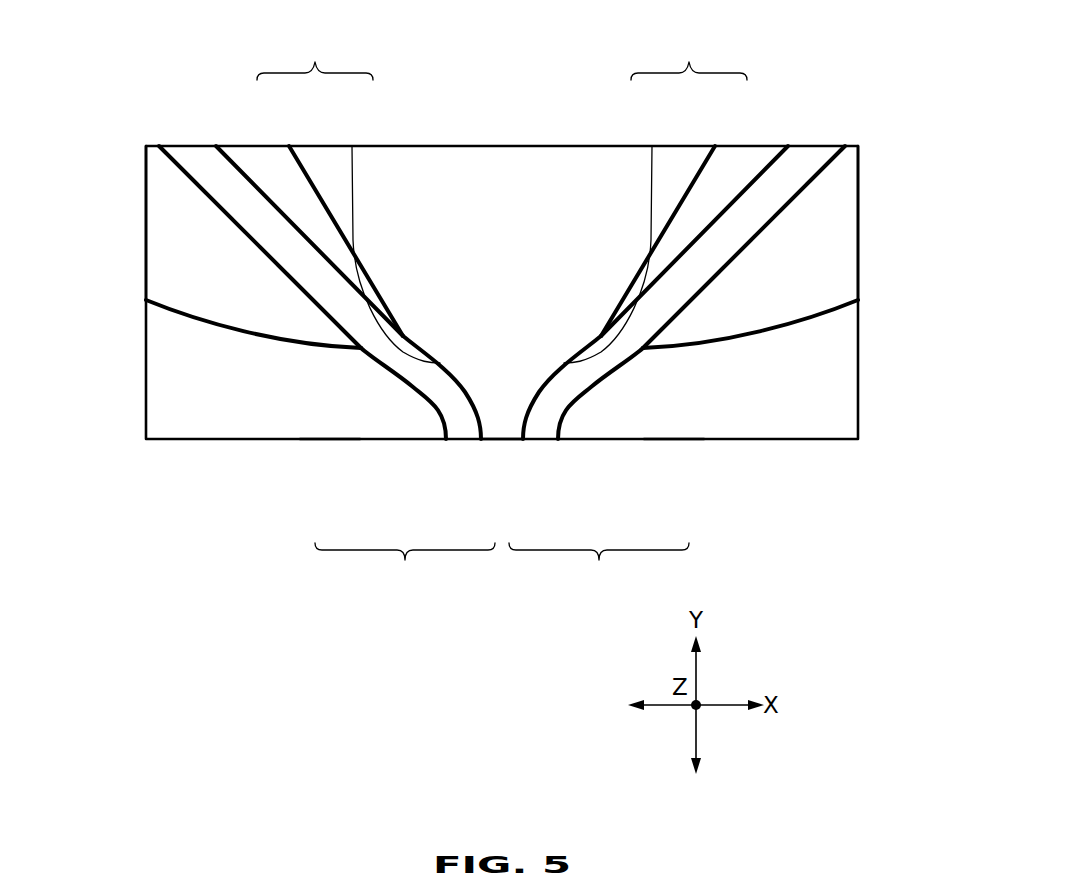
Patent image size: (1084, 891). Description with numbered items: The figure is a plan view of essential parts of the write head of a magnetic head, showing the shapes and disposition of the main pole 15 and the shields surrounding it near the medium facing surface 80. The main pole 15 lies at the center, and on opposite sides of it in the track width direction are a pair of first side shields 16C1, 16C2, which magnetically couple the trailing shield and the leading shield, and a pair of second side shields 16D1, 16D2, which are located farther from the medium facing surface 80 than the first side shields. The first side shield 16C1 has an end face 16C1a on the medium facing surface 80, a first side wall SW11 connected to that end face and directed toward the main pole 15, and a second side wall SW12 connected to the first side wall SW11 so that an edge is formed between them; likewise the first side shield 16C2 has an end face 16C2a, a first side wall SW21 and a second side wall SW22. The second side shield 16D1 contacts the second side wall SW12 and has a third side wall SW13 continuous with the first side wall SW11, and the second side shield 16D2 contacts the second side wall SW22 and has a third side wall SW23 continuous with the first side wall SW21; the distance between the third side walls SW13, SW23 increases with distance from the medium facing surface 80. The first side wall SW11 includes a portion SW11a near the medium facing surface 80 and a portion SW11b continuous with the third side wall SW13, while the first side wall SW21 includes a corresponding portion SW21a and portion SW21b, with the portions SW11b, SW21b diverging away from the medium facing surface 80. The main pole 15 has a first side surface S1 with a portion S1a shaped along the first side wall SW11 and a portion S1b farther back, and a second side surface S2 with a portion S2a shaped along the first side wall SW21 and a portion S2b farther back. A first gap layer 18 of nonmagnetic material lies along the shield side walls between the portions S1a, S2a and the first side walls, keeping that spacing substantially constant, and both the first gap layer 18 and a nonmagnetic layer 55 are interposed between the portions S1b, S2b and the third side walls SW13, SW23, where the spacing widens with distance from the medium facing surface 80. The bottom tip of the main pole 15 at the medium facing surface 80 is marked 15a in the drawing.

The main pole 15 is at (502, 160).
The bottom portion of insulating layer 15a is at (503, 439).
The first gap layer 18 is at (192, 152).
The nonmagnetic layer 55 is at (243, 152).
The medium facing surface 80 is at (164, 455).
The first side surface S1 is at (315, 57).
The portion of first side surface near the medium facing surface S1a is at (352, 146).
The portion of first side surface farther from the medium facing surface S1b is at (307, 177).
The second side surface S2 is at (689, 57).
The portion of second side surface near the medium facing surface S2a is at (620, 222).
The portion of second side surface farther from the medium facing surface S2b is at (672, 208).
The second side shield 16D1 is at (153, 203).
The second side shield 16D2 is at (903, 223).
The first side shield 16C1 is at (153, 375).
The first side shield 16C2 is at (799, 343).
The end face 16C1a is at (323, 439).
The end face 16C2a is at (681, 475).
The first side wall SW11 is at (405, 567).
The portion of first side wall near the medium facing surface SW11a is at (446, 414).
The portion of first side wall continuous with the third side wall SW11b is at (377, 364).
The second side wall SW12 is at (226, 326).
The third side wall SW13 is at (287, 274).
The first side wall SW21 is at (599, 567).
The portion of first side wall near the medium facing surface SW21a is at (556, 441).
The portion of first side wall continuous with the third side wall SW21b is at (622, 447).
The second side wall SW22 is at (777, 413).
The third side wall SW23 is at (835, 255).